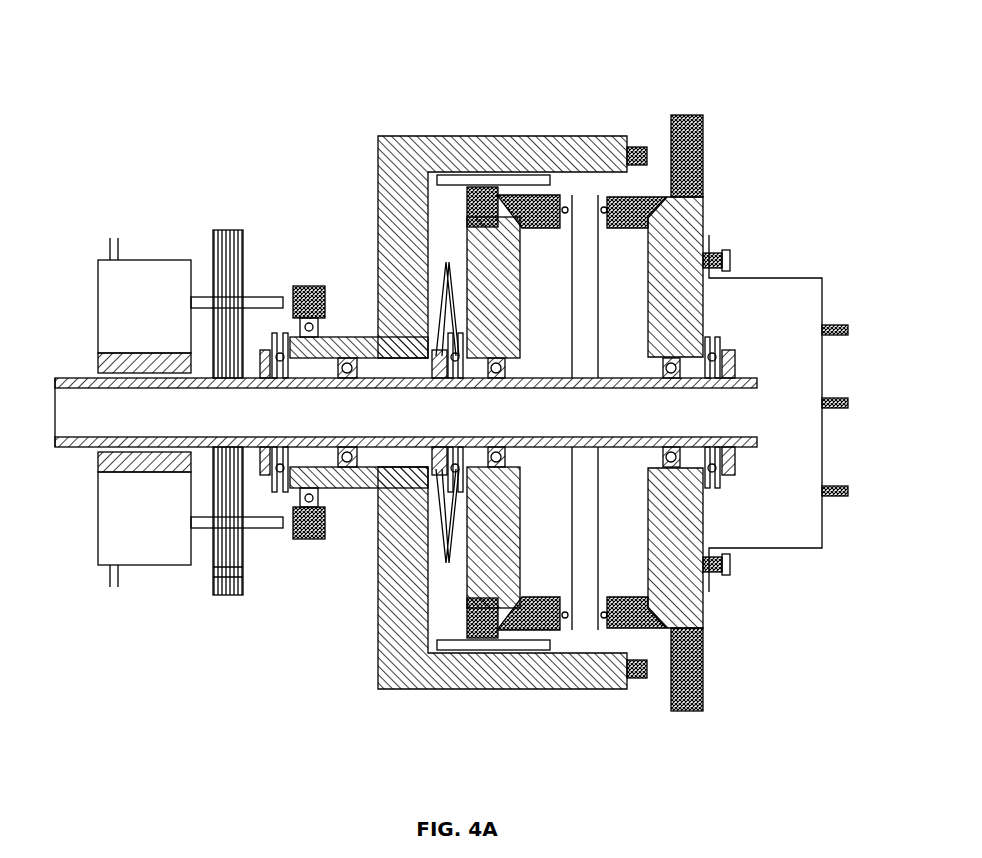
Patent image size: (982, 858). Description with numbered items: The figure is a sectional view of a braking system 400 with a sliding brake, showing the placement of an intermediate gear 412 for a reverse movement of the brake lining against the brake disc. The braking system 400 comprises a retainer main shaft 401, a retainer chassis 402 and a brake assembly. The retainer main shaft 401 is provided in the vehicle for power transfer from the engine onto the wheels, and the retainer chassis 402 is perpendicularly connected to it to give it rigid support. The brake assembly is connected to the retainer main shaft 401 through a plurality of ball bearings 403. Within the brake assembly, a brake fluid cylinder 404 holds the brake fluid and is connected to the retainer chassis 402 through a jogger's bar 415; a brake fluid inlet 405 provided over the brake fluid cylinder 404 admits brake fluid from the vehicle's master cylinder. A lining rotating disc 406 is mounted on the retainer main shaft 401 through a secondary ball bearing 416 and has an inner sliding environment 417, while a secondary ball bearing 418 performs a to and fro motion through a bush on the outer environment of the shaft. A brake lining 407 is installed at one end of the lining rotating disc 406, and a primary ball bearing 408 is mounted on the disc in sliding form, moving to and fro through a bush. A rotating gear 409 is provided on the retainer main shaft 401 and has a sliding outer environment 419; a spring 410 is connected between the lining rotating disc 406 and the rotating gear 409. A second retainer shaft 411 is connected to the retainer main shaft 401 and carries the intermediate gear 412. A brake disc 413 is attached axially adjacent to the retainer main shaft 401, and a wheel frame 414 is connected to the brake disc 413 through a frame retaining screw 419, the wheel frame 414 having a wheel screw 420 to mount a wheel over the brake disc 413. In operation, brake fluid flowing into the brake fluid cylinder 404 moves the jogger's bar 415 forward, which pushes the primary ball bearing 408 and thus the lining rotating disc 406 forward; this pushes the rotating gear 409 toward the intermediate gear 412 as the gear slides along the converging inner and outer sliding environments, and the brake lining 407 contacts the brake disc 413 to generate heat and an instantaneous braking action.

The braking system 400 is at (560, 74).
The retainer main shaft 401 is at (57, 378).
The retainer chassis 402 is at (222, 232).
The ball bearings 403 is at (347, 358).
The brake fluid cylinder 404 is at (98, 300).
The brake fluid inlet 405 is at (108, 246).
The lining rotating disc 406 is at (400, 136).
The brake lining 407 is at (637, 147).
The primary ball bearing 408 is at (306, 316).
The rotating gear 409 is at (463, 235).
The spring 410 is at (429, 272).
The second retainer shaft 411 is at (581, 632).
The intermediate gear 412 is at (544, 630).
The brake disc 413 is at (684, 128).
The wheel frame 414 is at (792, 278).
The jogger's bar 415 is at (262, 298).
The secondary ball bearing 416 is at (286, 492).
The inner sliding environment 417 is at (512, 175).
The secondary ball bearing 418 is at (485, 650).
The frame retaining screw 419 is at (731, 574).
The wheel screw 420 is at (846, 496).